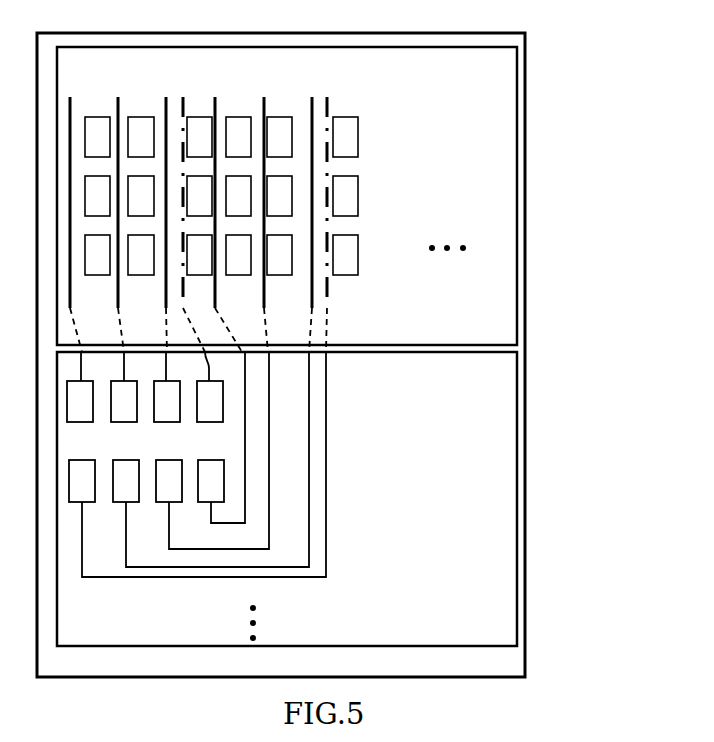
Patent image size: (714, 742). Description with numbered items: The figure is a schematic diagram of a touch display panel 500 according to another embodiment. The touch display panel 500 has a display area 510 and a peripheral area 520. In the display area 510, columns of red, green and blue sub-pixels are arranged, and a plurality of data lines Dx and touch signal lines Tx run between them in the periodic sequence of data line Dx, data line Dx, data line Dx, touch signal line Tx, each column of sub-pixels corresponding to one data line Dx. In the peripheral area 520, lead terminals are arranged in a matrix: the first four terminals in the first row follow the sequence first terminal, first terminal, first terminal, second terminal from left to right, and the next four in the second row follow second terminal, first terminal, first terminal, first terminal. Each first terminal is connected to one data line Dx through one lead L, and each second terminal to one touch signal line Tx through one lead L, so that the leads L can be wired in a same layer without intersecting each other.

The touch display panel 500 is at (438, 33).
The display area 510 is at (323, 196).
The peripheral area 520 is at (323, 499).
The data line Dx is at (70, 100).
The touch signal line Tx is at (183, 100).
The lead L is at (326, 422).